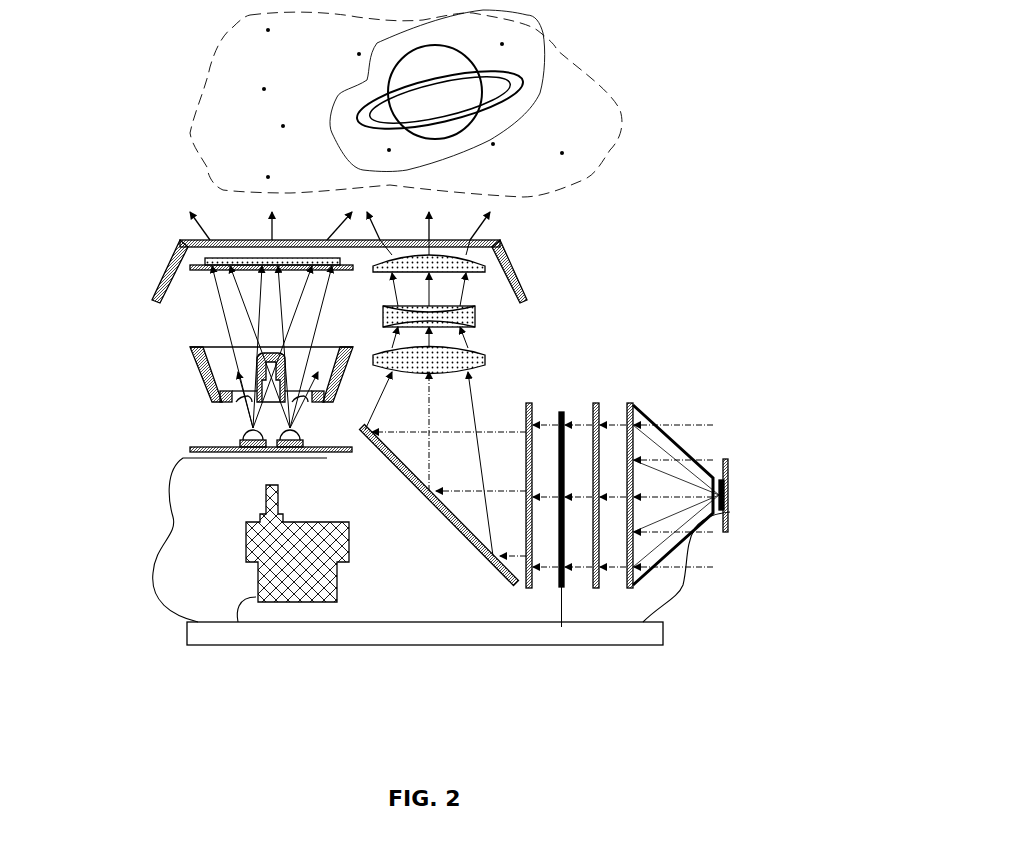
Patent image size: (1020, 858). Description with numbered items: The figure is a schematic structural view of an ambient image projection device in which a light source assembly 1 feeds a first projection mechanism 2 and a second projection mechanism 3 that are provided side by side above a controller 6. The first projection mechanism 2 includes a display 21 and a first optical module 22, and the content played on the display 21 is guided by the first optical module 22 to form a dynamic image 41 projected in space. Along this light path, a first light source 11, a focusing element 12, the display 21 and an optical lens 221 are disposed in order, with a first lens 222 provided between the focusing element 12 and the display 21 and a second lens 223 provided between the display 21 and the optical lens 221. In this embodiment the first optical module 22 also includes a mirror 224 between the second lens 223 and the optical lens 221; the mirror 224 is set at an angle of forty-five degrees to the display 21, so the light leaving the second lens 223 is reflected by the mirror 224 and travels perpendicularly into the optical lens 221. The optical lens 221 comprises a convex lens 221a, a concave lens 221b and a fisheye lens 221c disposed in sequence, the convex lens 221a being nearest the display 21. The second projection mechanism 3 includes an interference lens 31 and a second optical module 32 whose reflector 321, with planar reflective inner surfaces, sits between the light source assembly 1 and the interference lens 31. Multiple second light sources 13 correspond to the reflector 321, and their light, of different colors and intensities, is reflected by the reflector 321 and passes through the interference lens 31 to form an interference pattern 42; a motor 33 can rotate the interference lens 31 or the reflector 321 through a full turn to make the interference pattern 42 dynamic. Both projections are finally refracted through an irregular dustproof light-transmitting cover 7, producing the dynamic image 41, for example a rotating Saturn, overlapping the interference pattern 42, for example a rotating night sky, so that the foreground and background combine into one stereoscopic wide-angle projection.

The light source assembly 1 is at (657, 723).
The first light source 11 is at (722, 507).
The focusing element 12 is at (633, 587).
The second light source 13 is at (327, 458).
The first projection mechanism 2 is at (803, 252).
The display 21 is at (563, 477).
The first optical module 22 is at (723, 137).
The optical lens 221 is at (618, 178).
The convex lens 221a is at (483, 355).
The concave lens 221b is at (460, 308).
The fisheye lens 221c is at (483, 262).
The first lens 222 is at (599, 410).
The second lens 223 is at (533, 407).
The mirror 224 is at (390, 445).
The second projection mechanism 3 is at (70, 328).
The interference lens 31 is at (205, 273).
The second optical module 32 is at (192, 365).
The reflector 321 is at (207, 397).
The motor 33 is at (245, 532).
The dynamic image 41 is at (467, 43).
The interference pattern 42 is at (284, 128).
The controller 6 is at (322, 628).
The dustproof light-transmitting cover 7 is at (175, 248).